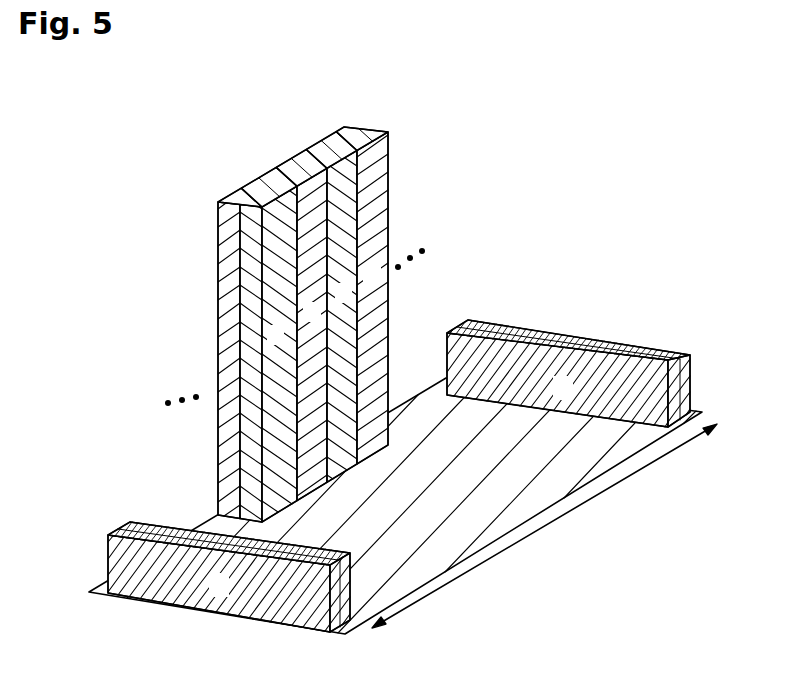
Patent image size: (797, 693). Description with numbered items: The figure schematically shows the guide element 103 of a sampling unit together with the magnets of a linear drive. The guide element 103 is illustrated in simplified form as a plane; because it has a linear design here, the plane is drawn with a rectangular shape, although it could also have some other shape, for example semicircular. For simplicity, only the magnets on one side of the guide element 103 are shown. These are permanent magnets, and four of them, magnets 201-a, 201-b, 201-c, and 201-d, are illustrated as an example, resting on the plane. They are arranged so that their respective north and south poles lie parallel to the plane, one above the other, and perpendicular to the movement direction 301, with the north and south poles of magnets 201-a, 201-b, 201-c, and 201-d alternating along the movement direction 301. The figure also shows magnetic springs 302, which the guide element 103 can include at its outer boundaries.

The guide element 103 is at (442, 447).
The magnet 201-a is at (238, 190).
The magnet 201-b is at (297, 170).
The magnet 201-c is at (308, 153).
The magnet 201-d is at (370, 135).
The movement direction 301 is at (487, 563).
The magnetic spring 302 is at (114, 533).